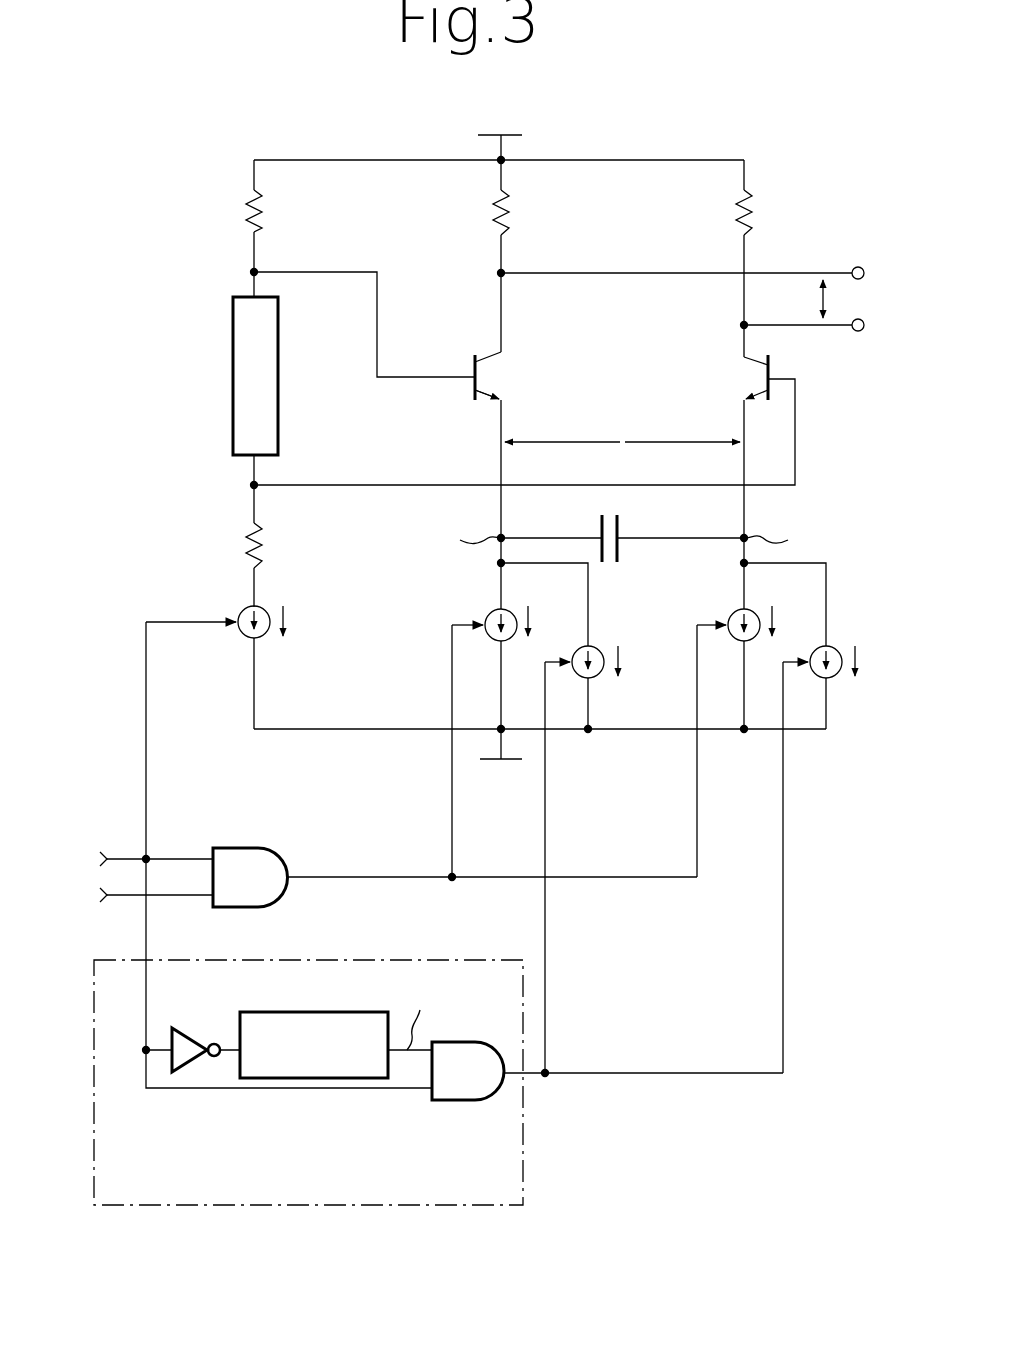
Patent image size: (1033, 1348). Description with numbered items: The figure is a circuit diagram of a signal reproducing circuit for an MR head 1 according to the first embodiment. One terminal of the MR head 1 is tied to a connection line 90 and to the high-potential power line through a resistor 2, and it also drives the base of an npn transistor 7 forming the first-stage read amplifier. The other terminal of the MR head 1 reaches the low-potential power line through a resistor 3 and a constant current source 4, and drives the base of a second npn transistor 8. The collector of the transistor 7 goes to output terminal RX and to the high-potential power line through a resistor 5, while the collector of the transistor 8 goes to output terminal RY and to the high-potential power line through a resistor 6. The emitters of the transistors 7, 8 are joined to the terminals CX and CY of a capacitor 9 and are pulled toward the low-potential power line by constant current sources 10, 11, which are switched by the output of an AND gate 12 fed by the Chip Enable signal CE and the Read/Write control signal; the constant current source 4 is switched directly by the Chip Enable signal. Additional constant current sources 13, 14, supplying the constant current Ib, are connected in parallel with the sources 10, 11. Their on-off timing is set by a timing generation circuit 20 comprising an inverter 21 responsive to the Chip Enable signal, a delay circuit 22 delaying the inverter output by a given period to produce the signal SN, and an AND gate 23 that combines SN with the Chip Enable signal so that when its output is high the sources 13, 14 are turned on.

The connection line 90 is at (246, 160).
The MR head 1 is at (233, 370).
The resistor 2 is at (252, 208).
The resistor 3 is at (252, 545).
The constant current source 4 is at (244, 613).
The resistor 5 is at (499, 208).
The resistor 6 is at (742, 210).
The npn transistor 7 is at (493, 378).
The npn transistor 8 is at (760, 380).
The capacitor 9 is at (621, 532).
The constant current source 10 is at (491, 616).
The constant current source 11 is at (735, 615).
The AND gate 12 is at (240, 848).
The constant current source 13 is at (580, 648).
The constant current source 14 is at (818, 648).
The timing generation circuit 20 is at (527, 1160).
The inverter 21 is at (200, 1028).
The delay circuit 22 is at (325, 1012).
The AND gate 23 is at (482, 1042).